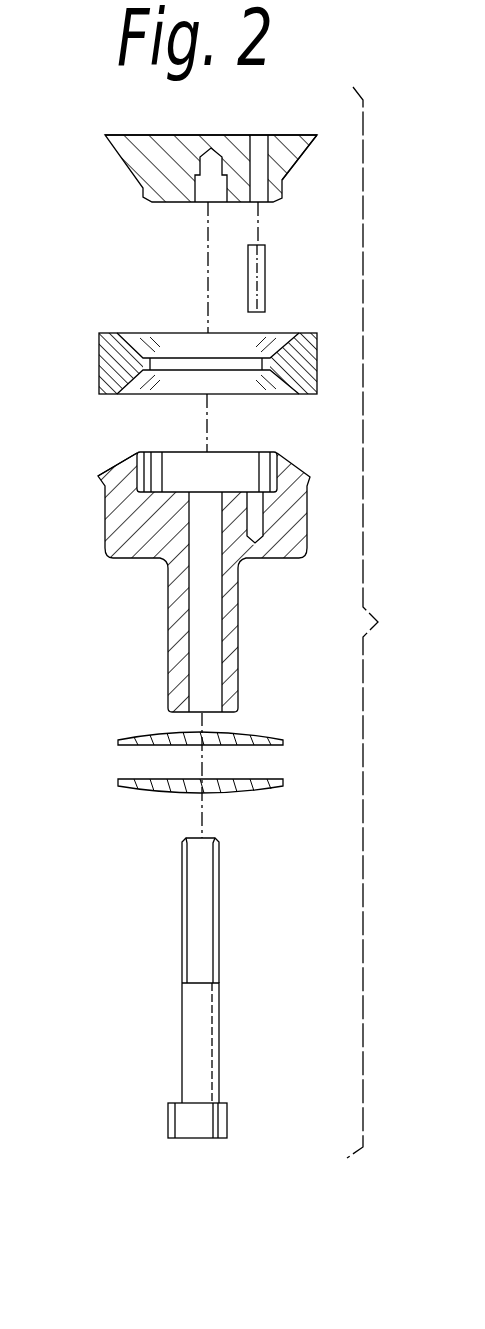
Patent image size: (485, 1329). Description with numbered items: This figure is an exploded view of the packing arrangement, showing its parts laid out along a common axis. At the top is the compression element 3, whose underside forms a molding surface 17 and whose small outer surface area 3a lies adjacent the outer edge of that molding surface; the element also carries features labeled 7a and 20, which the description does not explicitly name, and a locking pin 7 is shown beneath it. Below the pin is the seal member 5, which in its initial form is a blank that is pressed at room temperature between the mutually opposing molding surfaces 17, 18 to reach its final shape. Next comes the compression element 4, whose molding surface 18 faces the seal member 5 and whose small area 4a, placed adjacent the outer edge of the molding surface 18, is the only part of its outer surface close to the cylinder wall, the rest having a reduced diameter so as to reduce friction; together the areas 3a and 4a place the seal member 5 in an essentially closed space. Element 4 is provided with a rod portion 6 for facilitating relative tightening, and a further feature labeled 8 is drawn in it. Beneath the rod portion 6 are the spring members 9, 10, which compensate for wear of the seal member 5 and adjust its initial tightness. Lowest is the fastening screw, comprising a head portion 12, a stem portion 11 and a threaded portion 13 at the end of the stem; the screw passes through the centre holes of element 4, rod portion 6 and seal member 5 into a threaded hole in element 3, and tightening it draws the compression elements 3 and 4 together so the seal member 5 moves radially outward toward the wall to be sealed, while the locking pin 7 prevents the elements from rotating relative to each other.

The compression element 3 is at (150, 148).
The small outer surface area 3a is at (105, 140).
The slot for pin 7a is at (259, 158).
The molding surface 17 is at (290, 163).
The blind bore 20 is at (207, 192).
The locking pin 7 is at (262, 265).
The seal member 5 is at (290, 352).
The small area 4a is at (98, 476).
The molding surface 18 is at (293, 470).
The compression element 4 is at (285, 502).
The bore for pin 8 is at (255, 520).
The rod portion 6 is at (228, 630).
The spring member 9 is at (253, 737).
The spring member 10 is at (257, 785).
The threaded portion 13 is at (202, 900).
The stem portion 11 is at (202, 1023).
The head portion 12 is at (205, 1125).